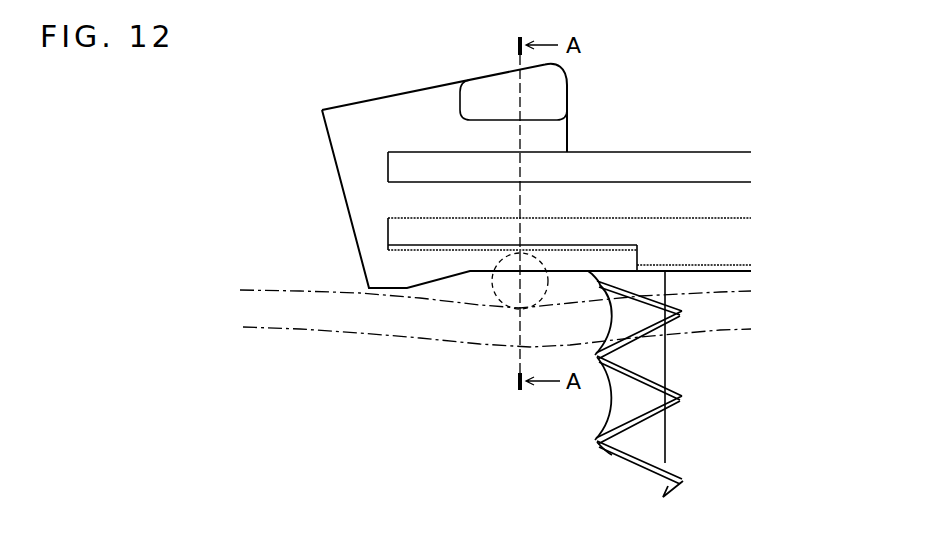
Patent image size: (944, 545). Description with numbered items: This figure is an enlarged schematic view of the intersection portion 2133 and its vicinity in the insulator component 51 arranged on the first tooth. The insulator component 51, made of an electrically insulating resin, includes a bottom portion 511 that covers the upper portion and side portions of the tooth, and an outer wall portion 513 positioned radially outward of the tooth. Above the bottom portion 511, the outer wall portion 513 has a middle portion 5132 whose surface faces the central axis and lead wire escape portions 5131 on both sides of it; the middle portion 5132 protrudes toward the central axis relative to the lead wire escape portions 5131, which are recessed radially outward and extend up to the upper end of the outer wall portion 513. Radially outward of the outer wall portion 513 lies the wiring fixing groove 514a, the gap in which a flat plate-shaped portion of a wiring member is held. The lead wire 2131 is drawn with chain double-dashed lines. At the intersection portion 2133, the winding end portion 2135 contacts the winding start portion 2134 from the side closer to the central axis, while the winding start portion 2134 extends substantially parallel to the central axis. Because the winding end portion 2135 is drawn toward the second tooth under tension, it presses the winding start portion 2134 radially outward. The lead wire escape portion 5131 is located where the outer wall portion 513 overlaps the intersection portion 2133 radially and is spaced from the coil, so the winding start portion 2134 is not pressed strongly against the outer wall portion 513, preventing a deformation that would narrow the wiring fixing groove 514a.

The insulator component 51 is at (276, 129).
The wiring fixing groove 514a is at (399, 206).
The outer wall portion 513 is at (403, 229).
The lead wire escape portion 5131 is at (423, 251).
The middle portion 5132 is at (731, 253).
The winding start portion 2134 is at (363, 282).
The winding end portion 2135 is at (378, 335).
The intersection portion 2133 is at (508, 318).
The lead wire 2131 is at (373, 408).
The bottom portion 511 is at (710, 425).